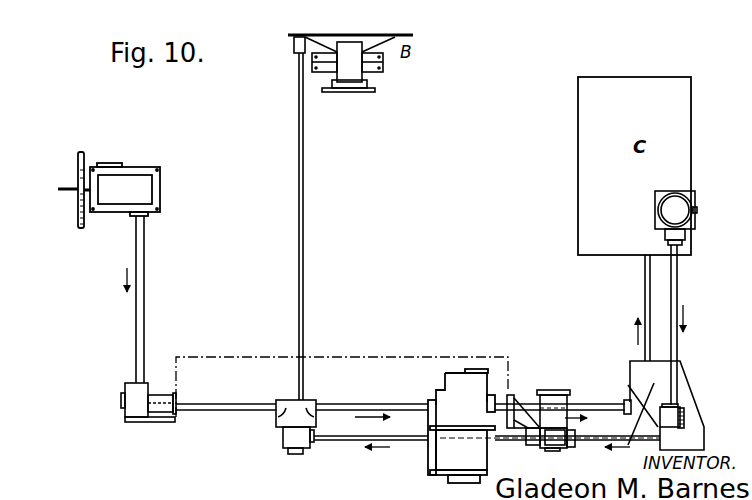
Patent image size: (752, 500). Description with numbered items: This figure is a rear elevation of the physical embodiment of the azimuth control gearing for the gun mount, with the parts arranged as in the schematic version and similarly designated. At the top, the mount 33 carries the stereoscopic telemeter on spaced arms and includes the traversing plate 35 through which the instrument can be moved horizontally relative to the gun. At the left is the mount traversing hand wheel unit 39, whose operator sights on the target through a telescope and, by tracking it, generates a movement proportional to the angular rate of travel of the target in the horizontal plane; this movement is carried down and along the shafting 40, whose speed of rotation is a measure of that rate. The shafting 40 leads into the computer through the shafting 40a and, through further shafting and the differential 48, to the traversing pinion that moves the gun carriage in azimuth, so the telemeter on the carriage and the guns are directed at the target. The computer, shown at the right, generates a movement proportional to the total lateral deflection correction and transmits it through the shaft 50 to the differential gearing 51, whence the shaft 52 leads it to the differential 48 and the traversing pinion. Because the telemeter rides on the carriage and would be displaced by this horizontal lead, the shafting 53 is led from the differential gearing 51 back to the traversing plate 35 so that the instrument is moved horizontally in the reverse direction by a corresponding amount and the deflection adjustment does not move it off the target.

The mount 33 is at (365, 70).
The traversing plate 35 is at (325, 38).
The mount traversing hand wheel unit 39 is at (101, 190).
The shafting 40 is at (136, 343).
The shafting 40a is at (583, 402).
The differential 48 is at (542, 468).
The shaft 50 is at (680, 363).
The differential gearing 51 is at (570, 442).
The shaft 52 is at (492, 440).
The shafting 53 is at (337, 437).